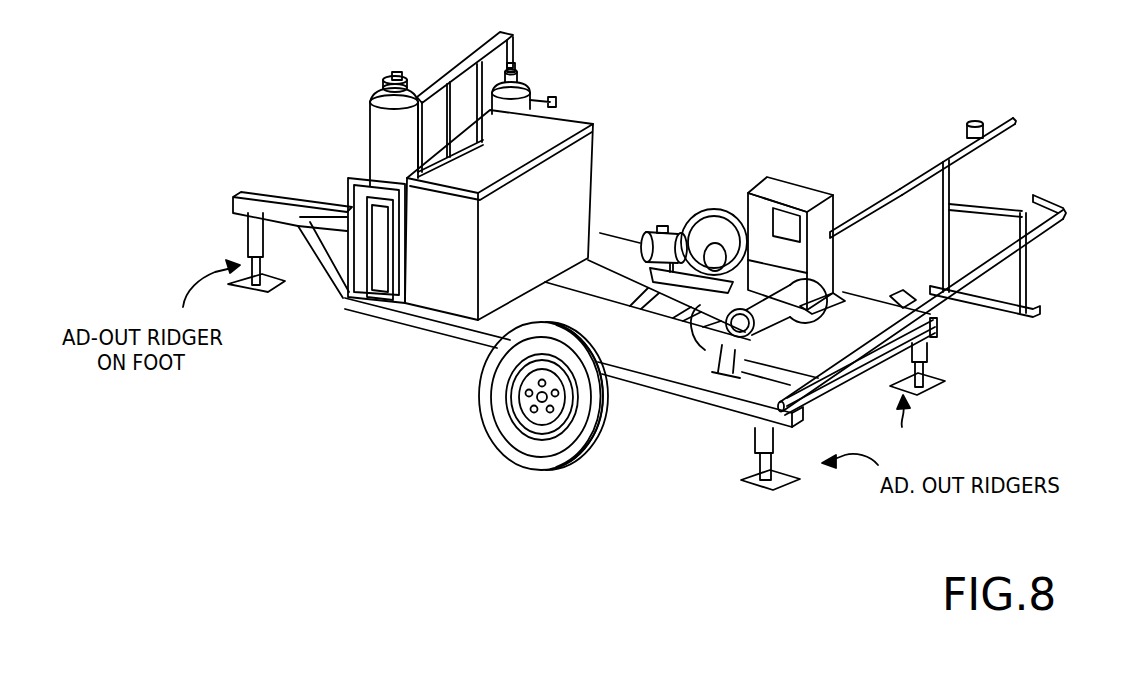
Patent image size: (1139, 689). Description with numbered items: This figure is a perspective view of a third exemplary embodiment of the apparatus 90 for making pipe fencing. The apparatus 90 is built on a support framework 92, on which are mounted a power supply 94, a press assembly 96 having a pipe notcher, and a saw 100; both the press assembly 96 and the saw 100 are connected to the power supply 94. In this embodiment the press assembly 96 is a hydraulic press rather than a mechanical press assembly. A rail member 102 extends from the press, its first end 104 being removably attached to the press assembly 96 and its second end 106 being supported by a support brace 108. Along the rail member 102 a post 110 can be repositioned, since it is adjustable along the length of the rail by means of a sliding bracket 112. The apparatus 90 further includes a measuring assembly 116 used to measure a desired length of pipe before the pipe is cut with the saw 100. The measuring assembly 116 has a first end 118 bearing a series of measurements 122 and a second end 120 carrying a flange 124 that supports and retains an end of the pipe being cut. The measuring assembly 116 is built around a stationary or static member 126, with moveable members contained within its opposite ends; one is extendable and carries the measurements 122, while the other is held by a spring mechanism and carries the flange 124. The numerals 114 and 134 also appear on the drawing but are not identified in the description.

The apparatus 90 is at (730, 86).
The support framework 92 is at (668, 366).
The power supply 94 is at (558, 122).
The press assembly 96 is at (805, 196).
The saw 100 is at (766, 338).
The rail member 102 is at (910, 172).
The first end 104 is at (836, 238).
The second end 106 is at (1008, 121).
The support brace 108 is at (1030, 270).
The post 110 is at (975, 120).
The sliding bracket 112 is at (986, 140).
The motor / wheel 114 is at (708, 215).
The measuring assembly 116 is at (867, 372).
The first end 118 is at (797, 425).
The second end 120 is at (980, 272).
The series of measurements 122 is at (822, 388).
The flange 124 is at (1040, 196).
The static member 126 is at (852, 355).
The adjustable outrigger jack foot 134 is at (270, 250).